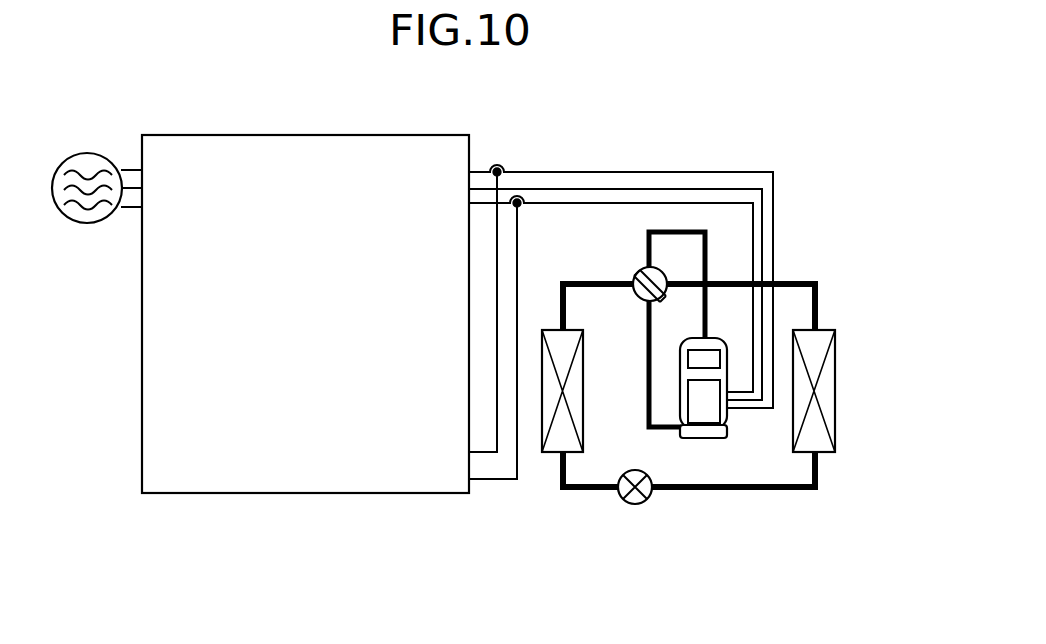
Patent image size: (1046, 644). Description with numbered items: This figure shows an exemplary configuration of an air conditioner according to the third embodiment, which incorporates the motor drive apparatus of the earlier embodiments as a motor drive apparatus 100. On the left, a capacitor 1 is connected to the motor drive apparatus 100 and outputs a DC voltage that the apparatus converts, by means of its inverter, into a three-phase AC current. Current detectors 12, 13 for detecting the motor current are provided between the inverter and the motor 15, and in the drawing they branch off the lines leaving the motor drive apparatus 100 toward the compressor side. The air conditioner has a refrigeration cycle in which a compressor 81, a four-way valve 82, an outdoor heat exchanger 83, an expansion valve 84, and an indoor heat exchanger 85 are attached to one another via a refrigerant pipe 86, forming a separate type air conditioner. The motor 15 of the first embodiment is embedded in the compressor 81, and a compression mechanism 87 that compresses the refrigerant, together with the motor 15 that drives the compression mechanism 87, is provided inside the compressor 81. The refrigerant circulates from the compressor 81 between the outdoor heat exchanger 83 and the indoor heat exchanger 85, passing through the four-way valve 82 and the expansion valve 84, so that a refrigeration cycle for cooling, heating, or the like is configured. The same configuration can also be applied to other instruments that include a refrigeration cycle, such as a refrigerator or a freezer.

The capacitor 1 is at (92, 152).
The motor drive apparatus 100 is at (380, 135).
The current detector 12 is at (497, 166).
The current detector 13 is at (524, 207).
The motor 15 is at (706, 420).
The compressor 81 is at (725, 433).
The four-way valve 82 is at (640, 300).
The outdoor heat exchanger 83 is at (552, 455).
The expansion valve 84 is at (636, 505).
The indoor heat exchanger 85 is at (820, 330).
The refrigerant pipe 86 is at (790, 491).
The compression mechanism 87 is at (713, 352).